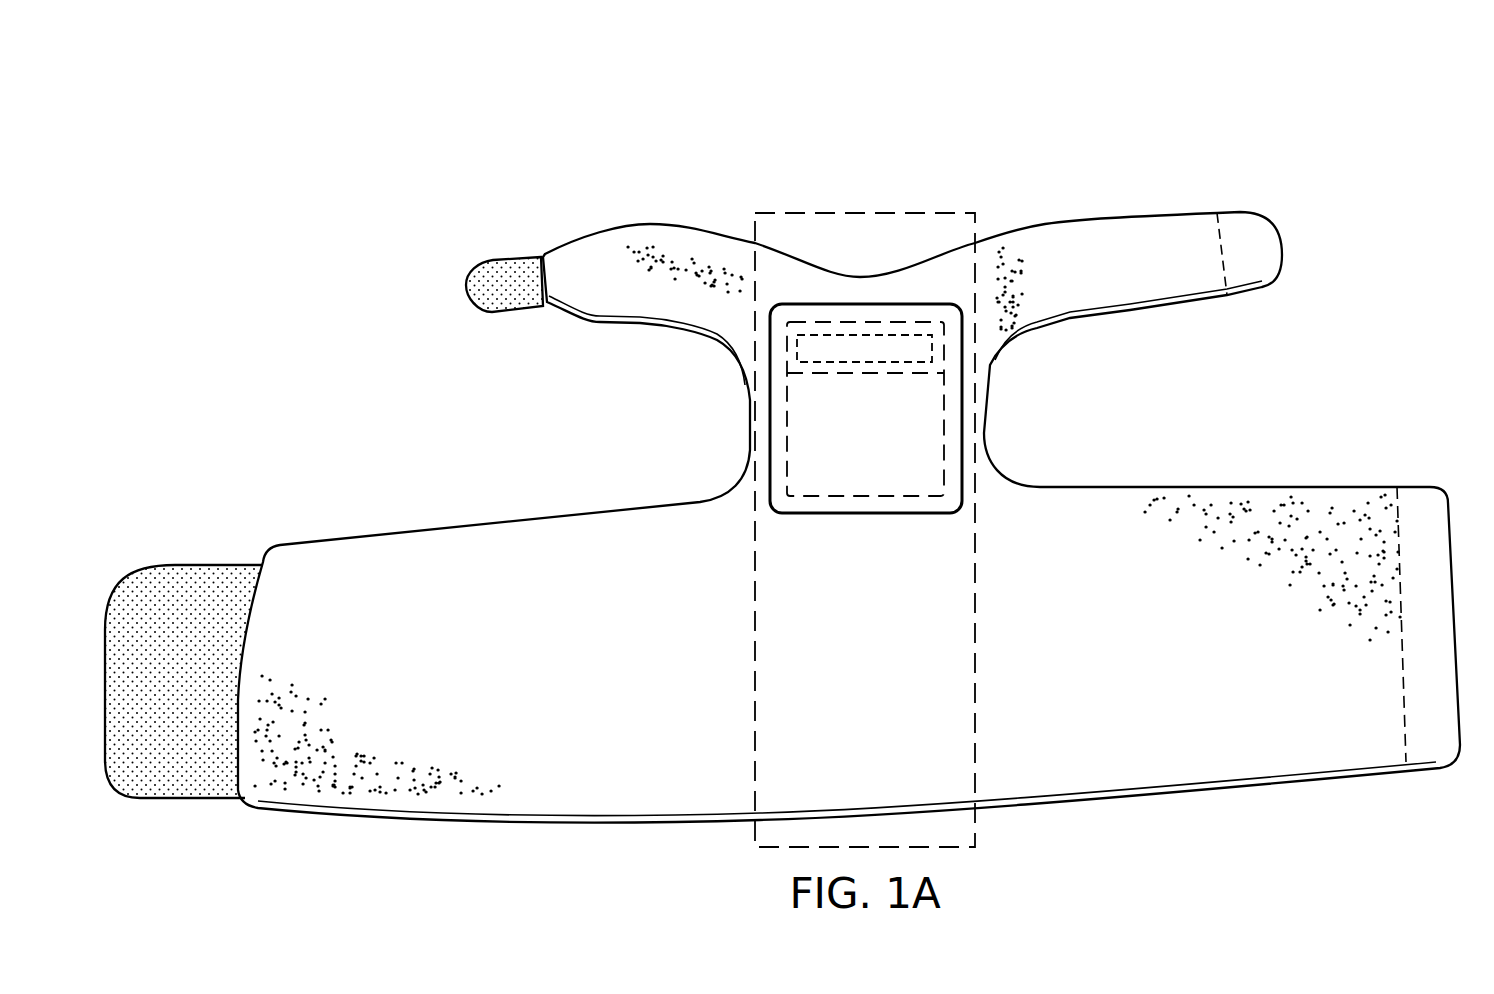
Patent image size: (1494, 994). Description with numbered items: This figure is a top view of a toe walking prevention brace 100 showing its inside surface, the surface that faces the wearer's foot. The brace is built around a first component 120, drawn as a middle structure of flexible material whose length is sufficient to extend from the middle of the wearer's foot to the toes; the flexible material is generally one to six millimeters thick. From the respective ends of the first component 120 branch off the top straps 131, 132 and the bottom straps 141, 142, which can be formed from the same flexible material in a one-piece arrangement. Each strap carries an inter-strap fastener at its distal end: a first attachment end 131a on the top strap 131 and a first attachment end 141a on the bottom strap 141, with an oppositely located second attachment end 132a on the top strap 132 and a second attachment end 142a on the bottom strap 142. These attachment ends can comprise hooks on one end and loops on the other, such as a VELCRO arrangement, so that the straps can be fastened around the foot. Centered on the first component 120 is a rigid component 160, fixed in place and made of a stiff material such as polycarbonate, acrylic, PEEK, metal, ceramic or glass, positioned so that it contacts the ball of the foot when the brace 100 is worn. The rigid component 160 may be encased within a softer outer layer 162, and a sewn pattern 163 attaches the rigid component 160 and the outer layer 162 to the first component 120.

The toe walking prevention brace 100 is at (1036, 98).
The first component 120 is at (750, 674).
The top strap 131 is at (603, 242).
The first attachment end 131a is at (497, 277).
The top strap 132 is at (1093, 232).
The second attachment end 132a is at (1265, 237).
The bottom strap 141 is at (536, 812).
The first attachment end 141a is at (172, 800).
The bottom strap 142 is at (1247, 772).
The second attachment end 142a is at (1430, 754).
The rigid component 160 is at (866, 408).
The outer layer 162 is at (812, 462).
The sewn pattern 163 is at (948, 425).